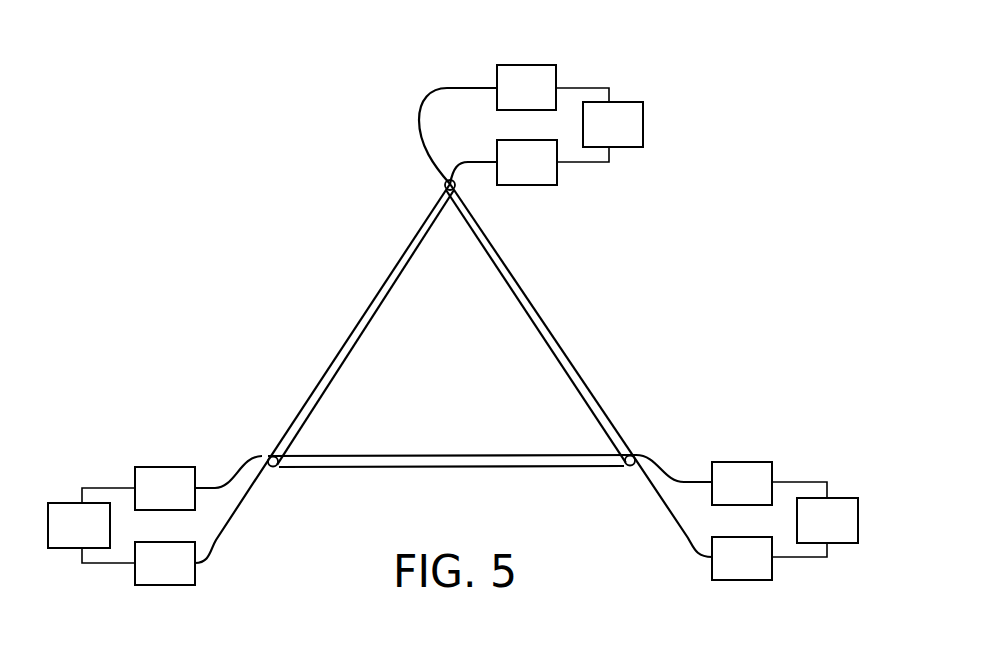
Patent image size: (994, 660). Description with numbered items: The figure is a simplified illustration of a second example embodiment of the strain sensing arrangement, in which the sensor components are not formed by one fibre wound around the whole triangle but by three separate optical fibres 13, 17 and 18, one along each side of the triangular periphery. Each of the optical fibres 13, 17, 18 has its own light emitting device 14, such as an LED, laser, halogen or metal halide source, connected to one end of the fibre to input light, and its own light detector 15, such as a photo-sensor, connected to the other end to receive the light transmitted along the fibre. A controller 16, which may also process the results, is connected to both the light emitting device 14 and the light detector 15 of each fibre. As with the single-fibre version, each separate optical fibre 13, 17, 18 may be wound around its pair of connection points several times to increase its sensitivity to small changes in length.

The optical fibre 13 is at (528, 290).
The light emitting device 14 is at (539, 98).
The light collecting device 15 is at (539, 173).
The controller 16 is at (625, 135).
The optical fibre 17 is at (453, 467).
The optical fibre 18 is at (379, 291).